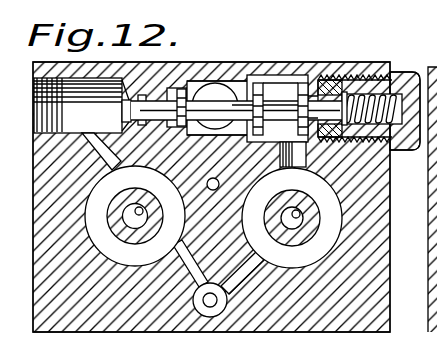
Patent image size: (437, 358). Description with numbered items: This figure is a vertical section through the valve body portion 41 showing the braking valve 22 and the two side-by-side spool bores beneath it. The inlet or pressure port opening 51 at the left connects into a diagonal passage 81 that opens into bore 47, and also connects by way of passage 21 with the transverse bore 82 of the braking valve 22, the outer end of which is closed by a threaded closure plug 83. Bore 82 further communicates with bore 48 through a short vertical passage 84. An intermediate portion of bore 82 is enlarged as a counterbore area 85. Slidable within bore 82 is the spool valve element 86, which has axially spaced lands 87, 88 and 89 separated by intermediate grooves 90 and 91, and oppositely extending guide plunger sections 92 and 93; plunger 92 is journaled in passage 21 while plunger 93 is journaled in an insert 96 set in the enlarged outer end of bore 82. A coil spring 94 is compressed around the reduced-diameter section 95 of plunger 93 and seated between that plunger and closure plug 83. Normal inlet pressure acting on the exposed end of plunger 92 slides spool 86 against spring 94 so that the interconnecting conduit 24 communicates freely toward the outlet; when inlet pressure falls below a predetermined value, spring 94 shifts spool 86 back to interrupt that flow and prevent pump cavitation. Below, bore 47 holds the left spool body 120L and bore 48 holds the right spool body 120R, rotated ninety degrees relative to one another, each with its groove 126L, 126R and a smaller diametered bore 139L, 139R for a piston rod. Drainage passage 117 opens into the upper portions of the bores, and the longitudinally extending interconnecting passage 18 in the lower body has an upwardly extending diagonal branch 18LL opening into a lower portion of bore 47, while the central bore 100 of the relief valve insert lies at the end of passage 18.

The bore 47 is at (95, 240).
The inlet or pressure port opening 51 is at (36, 128).
The passage 21 is at (137, 118).
The guide plunger section 92 is at (158, 98).
The land 87 is at (180, 83).
The spool valve element 86 is at (186, 92).
The valve body portion 41 is at (230, 90).
The interconnecting conduit 24 is at (232, 98).
The groove 90 is at (237, 101).
The land 88 is at (258, 83).
The braking valve 22 is at (276, 76).
The groove 91 is at (289, 86).
The counterbore area 85 is at (304, 84).
The land 89 is at (310, 87).
The insert 96 is at (335, 79).
The guide plunger section 93 is at (323, 140).
The coil spring 94 is at (372, 98).
The reduced-diameter section 95 is at (373, 127).
The threaded closure plug 83 is at (398, 73).
The transverse bore 82 is at (199, 124).
The short vertical passage 84 is at (283, 153).
The smaller diametered bore 139L is at (141, 208).
The smaller diametered bore 139R is at (300, 216).
The spool body member 120L is at (117, 234).
The spool body member 120R is at (301, 238).
The groove 126L is at (134, 257).
The groove 126R is at (331, 235).
The diagonal passage 81 is at (92, 163).
The drainage passage 117 is at (210, 190).
The bore 48 is at (243, 226).
The diagonal branch 18LL is at (184, 274).
The central bore 100 is at (212, 280).
The longitudinally extending interconnecting passage 18 is at (222, 302).